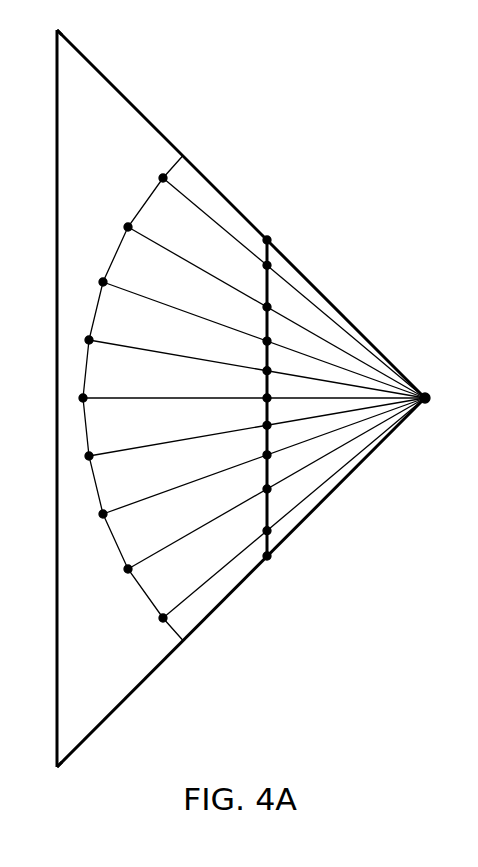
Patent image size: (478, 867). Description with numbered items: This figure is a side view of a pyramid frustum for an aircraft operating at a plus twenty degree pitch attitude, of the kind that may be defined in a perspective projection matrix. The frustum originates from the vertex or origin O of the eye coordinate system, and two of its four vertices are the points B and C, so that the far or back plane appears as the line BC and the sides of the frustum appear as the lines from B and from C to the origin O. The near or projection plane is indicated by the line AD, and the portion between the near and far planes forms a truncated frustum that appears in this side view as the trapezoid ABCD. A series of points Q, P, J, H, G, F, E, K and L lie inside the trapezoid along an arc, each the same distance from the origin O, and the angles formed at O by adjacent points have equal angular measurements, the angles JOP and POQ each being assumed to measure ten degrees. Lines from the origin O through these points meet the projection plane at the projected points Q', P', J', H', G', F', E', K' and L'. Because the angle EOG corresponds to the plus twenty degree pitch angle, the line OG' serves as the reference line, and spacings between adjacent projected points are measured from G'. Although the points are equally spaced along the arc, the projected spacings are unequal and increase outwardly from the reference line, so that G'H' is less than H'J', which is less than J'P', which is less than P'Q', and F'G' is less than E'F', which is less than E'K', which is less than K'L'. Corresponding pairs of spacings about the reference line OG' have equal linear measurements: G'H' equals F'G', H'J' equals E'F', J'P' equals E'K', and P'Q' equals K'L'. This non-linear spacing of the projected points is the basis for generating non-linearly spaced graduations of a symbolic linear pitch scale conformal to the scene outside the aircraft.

The vertex of pyramid frustum B is at (49, 32).
The vertex of pyramid frustum C is at (49, 770).
The origin of eye coordinate system O is at (435, 398).
The near plane endpoint A is at (274, 231).
The near plane endpoint D is at (274, 563).
The point on arc Q is at (155, 169).
The point on arc P is at (122, 218).
The point on arc J is at (97, 277).
The point on arc H is at (80, 337).
The point on arc G is at (75, 398).
The point on arc F is at (81, 461).
The point on arc E is at (96, 521).
The point on arc K is at (122, 579).
The point on arc L is at (157, 628).
The projected point on projection plane Q' is at (257, 271).
The projected point on projection plane P' is at (277, 301).
The projected point on projection plane J' is at (259, 328).
The projected point on projection plane H' is at (258, 361).
The projected reference point on projection plane G' is at (257, 389).
The projected point on projection plane F' is at (257, 416).
The projected point on projection plane E' is at (257, 447).
The projected point on projection plane K' is at (257, 484).
The projected point on projection plane L' is at (257, 527).